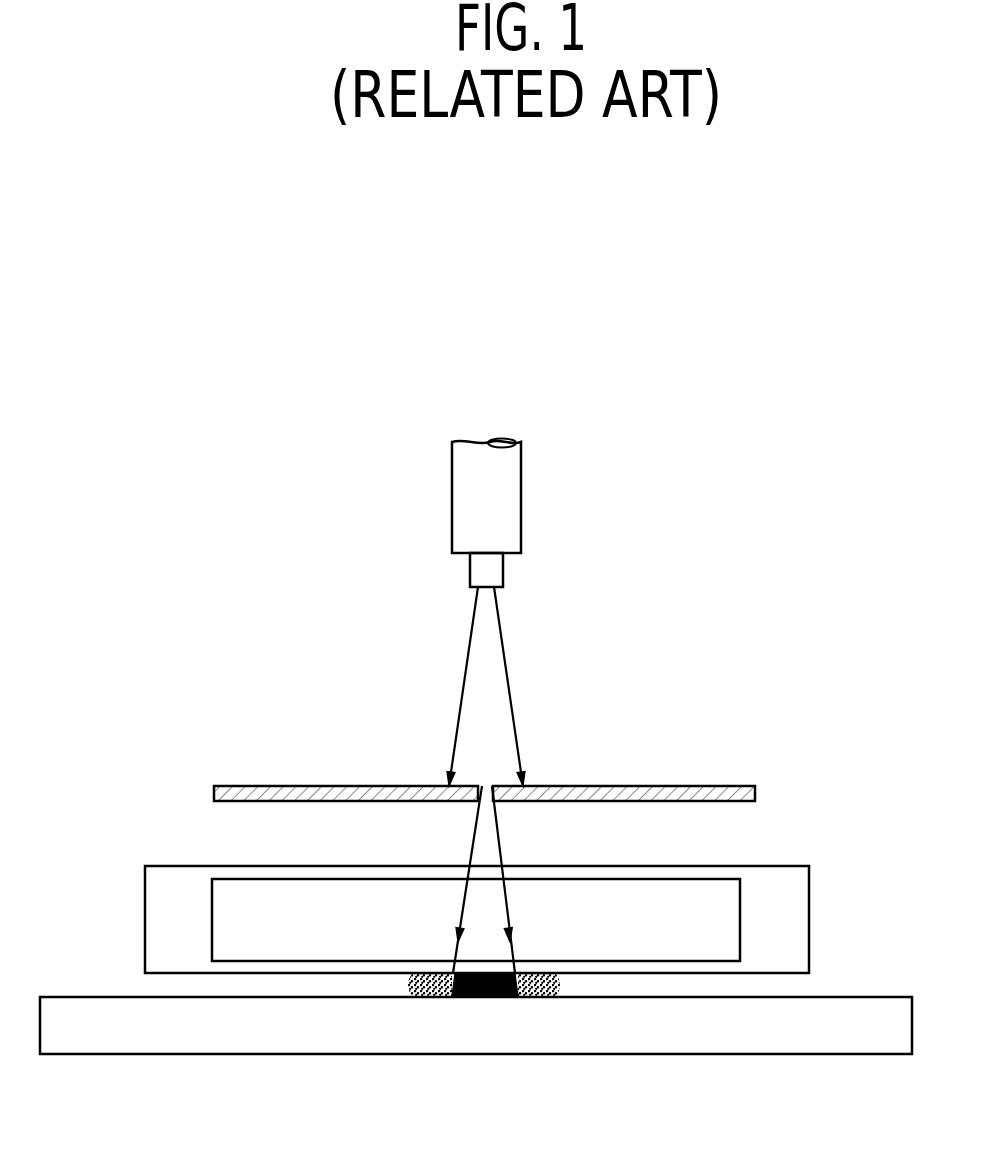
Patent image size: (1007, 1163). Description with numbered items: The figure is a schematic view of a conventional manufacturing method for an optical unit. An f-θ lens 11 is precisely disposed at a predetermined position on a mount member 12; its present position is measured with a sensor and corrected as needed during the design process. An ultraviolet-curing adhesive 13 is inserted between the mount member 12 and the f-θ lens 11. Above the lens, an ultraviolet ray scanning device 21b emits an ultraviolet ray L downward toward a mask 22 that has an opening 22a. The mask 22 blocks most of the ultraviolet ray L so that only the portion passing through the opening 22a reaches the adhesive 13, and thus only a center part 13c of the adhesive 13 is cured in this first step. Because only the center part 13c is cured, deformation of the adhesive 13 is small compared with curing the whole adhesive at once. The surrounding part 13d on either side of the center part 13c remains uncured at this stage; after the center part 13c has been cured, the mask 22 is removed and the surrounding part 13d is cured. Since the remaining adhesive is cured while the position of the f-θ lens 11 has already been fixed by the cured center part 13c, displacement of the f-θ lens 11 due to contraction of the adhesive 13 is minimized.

The ultraviolet ray scanning device 21b is at (500, 567).
The ultraviolet ray L is at (506, 676).
The mask 22 is at (697, 790).
The opening 22a is at (488, 820).
The f-θ lens 11 is at (165, 865).
The mount member 12 is at (172, 1048).
The ultraviolet-curing adhesive 13 is at (513, 1044).
The center part 13c is at (490, 997).
The surrounding part 13d is at (437, 996).